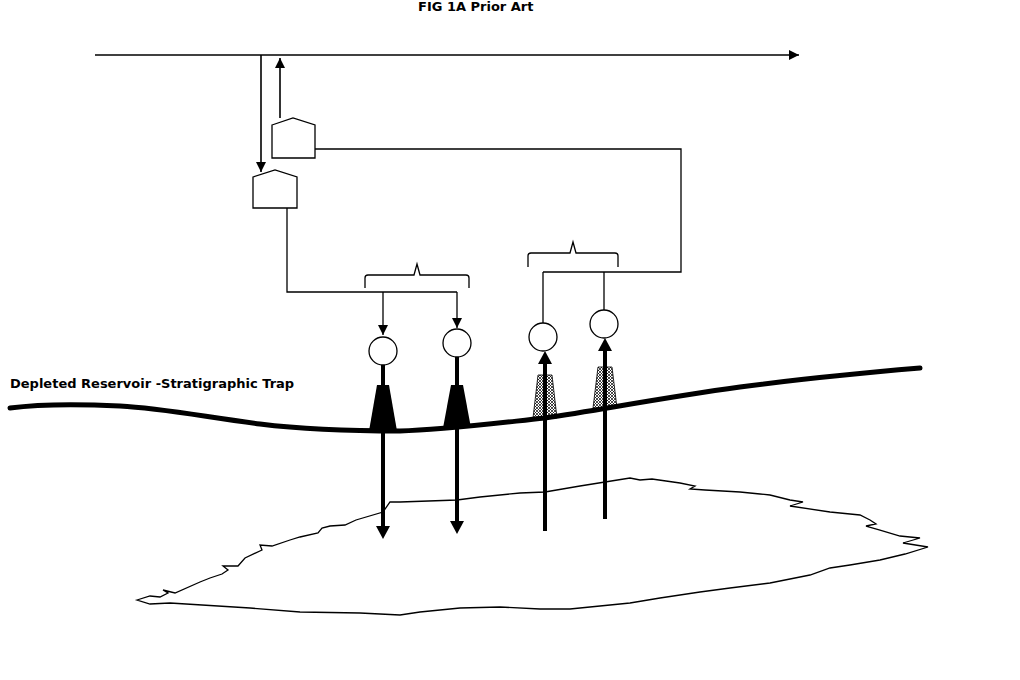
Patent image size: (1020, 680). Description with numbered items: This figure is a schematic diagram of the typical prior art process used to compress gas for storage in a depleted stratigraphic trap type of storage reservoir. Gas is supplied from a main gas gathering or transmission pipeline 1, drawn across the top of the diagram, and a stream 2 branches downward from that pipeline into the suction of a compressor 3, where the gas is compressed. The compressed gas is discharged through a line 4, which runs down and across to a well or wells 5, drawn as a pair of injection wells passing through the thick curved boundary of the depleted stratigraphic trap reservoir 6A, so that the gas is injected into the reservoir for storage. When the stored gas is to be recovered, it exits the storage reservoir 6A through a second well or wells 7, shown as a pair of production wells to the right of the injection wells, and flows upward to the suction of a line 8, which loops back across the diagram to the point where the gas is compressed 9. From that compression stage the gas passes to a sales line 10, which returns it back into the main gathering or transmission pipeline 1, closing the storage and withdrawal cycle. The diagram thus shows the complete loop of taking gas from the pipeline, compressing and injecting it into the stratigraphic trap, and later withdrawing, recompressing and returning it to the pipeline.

The main gas gathering or transmission pipeline 1 is at (167, 59).
The stream 2 is at (254, 90).
The compressor 3 is at (246, 196).
The line 4 is at (279, 262).
The wells or well 5 is at (418, 389).
The depleted stratigraphic trap reservoir 6A is at (268, 540).
The well or wells 7 is at (573, 377).
The line 8 is at (688, 202).
The compressor 9 is at (321, 128).
The sales line 10 is at (285, 106).